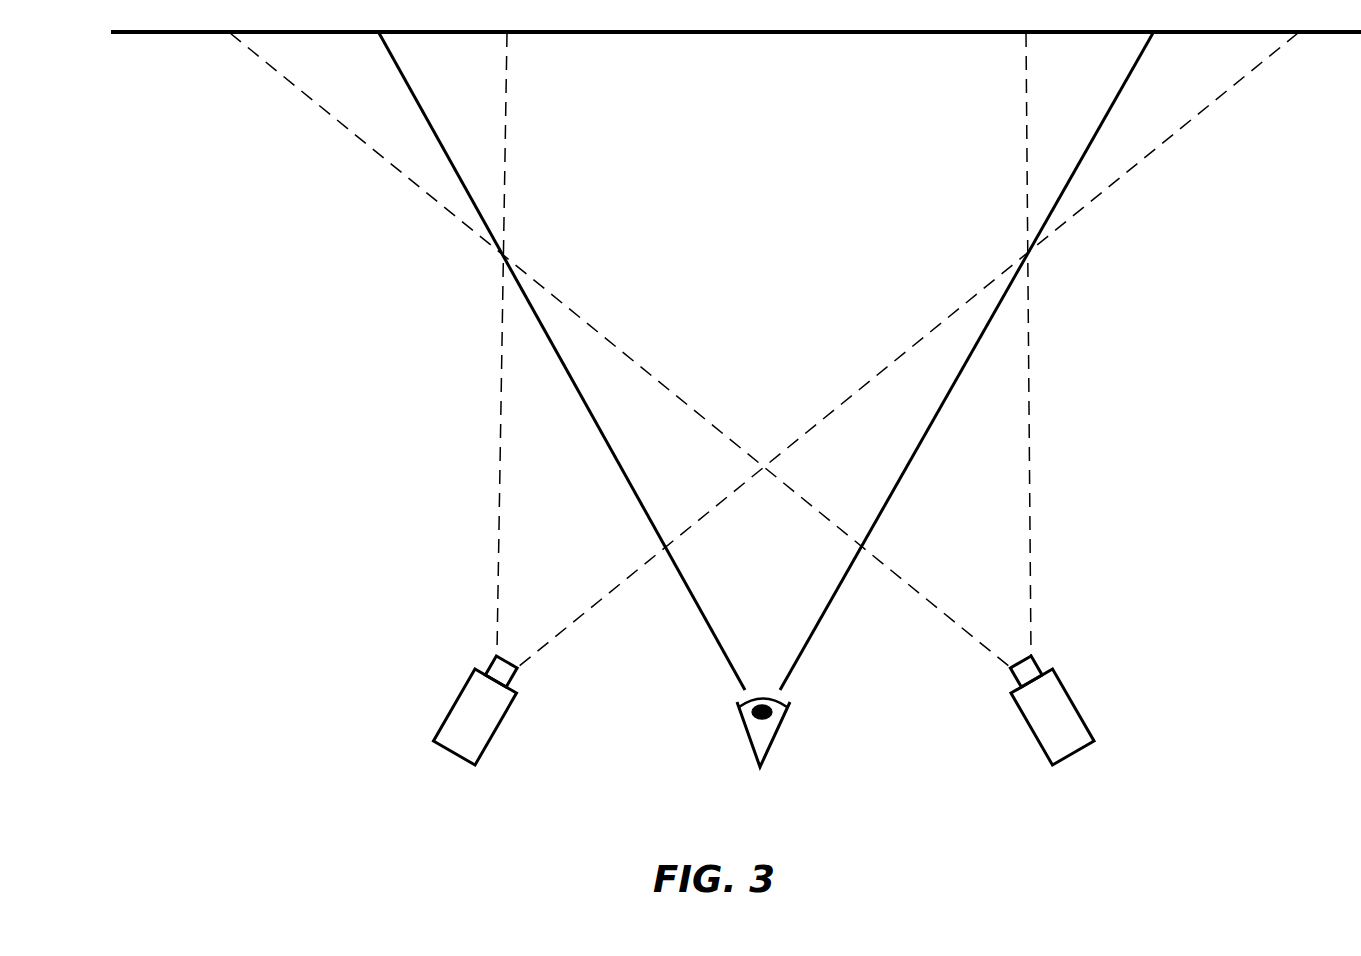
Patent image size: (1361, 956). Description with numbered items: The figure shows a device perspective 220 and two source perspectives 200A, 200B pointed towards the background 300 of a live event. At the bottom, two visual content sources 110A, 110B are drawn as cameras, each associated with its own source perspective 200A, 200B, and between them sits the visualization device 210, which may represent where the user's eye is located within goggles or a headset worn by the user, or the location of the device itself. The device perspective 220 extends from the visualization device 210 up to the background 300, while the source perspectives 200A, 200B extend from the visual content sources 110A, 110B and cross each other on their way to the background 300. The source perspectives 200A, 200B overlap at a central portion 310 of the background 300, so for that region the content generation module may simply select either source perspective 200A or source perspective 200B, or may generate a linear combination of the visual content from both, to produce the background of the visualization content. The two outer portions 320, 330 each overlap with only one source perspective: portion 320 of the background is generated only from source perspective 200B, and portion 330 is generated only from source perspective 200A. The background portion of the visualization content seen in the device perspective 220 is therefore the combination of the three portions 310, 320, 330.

The background 300 is at (1349, 52).
The portion 310 is at (766, 53).
The portion 320 is at (443, 53).
The portion 330 is at (1089, 53).
The device perspective 220 is at (766, 361).
The source perspective 200A is at (897, 350).
The source perspective 200B is at (630, 350).
The visual content source 110A is at (500, 735).
The visual content source 110B is at (1078, 700).
The visualization device 210 is at (773, 749).